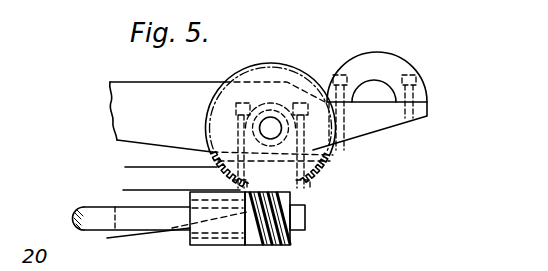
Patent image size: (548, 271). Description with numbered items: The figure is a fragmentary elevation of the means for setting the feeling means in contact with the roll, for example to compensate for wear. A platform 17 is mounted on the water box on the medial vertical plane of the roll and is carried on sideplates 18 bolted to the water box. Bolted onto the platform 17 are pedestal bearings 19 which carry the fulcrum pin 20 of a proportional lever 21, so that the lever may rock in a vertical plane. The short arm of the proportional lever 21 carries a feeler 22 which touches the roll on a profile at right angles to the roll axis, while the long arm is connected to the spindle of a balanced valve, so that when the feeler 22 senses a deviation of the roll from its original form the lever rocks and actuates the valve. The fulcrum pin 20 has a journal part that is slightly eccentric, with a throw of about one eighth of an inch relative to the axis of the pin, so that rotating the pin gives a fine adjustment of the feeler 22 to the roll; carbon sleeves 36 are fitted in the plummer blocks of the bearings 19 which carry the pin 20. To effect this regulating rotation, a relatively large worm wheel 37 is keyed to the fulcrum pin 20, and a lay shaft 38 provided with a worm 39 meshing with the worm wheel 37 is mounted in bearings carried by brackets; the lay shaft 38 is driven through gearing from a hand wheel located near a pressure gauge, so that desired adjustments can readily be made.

The platform 17 is at (128, 176).
The sideplates 18 is at (118, 237).
The pedestal bearings 19 is at (333, 155).
The fulcrum pin 20 is at (273, 125).
The proportional lever 21 is at (149, 92).
The feeler 22 is at (392, 63).
The carbon sleeves 36 is at (266, 107).
The worm wheel 37 is at (320, 166).
The lay shaft 38 is at (107, 212).
The worm 39 is at (270, 243).